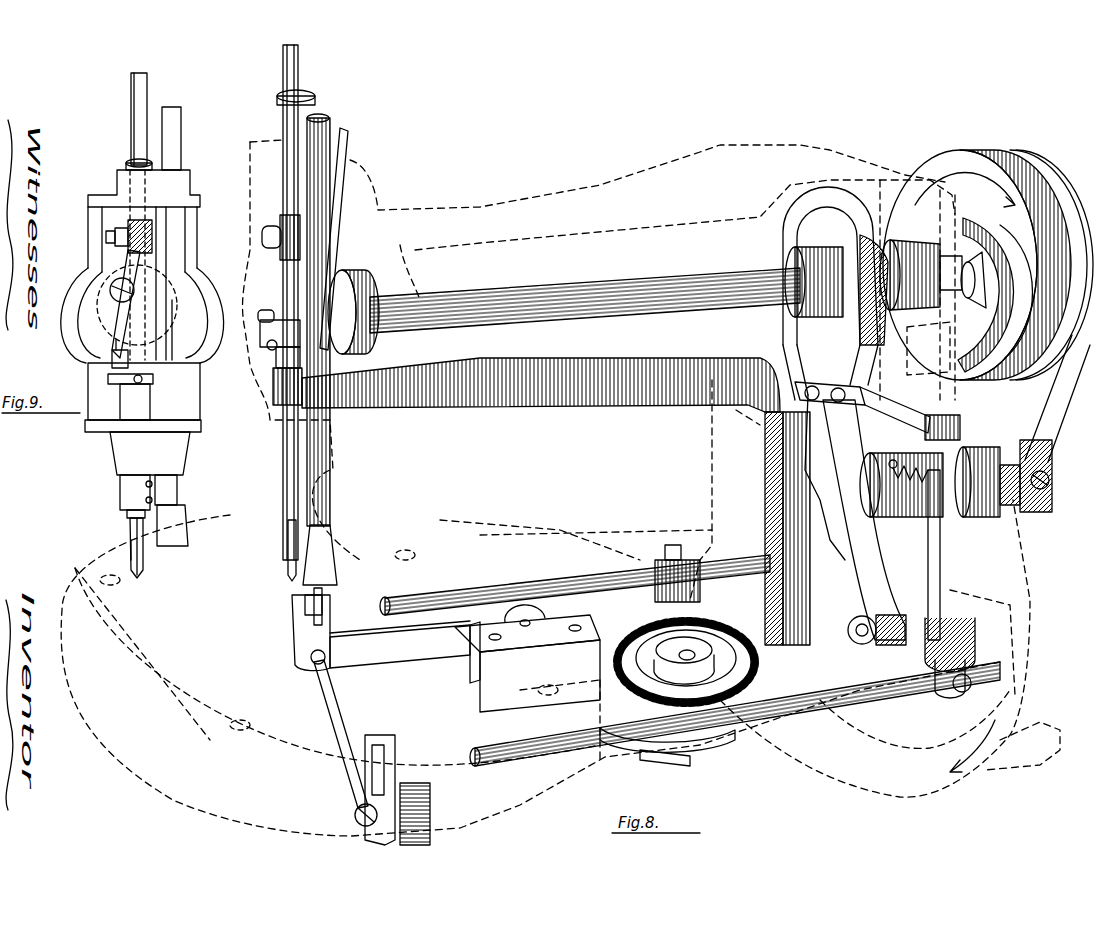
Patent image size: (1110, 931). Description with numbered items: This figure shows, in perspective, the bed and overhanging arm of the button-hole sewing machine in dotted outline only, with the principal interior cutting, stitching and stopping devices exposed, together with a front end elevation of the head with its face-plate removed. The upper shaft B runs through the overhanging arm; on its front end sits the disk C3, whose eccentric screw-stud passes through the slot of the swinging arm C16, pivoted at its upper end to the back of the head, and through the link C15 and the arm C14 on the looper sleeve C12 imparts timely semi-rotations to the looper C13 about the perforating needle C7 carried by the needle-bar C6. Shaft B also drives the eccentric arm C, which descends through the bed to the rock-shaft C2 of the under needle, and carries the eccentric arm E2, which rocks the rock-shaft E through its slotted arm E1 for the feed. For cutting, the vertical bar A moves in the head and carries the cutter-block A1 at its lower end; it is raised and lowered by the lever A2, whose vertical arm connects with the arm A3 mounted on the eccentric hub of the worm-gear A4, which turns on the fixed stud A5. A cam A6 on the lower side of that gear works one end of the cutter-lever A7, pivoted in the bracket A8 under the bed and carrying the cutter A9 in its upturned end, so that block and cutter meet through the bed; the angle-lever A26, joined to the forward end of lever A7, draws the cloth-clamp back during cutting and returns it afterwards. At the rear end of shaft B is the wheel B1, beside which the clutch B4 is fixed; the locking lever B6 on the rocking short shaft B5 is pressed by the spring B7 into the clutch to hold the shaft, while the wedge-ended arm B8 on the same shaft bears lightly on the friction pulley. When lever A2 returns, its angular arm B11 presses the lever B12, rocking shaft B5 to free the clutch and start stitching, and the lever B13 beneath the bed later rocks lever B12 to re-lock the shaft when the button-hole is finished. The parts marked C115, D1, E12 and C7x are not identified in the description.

In FIG. 9, the slotted swinging arm C16 is at (132, 104).
In FIG. 8, the slotted swinging arm C16 is at (332, 240).
In FIG. 9, the link C15 is at (152, 225).
In FIG. 8, the link C15 is at (280, 250).
In FIG. 9, the arm C14 is at (128, 268).
In FIG. 8, the arm C14 is at (258, 321).
In FIG. 9, the link C115 is at (110, 358).
In FIG. 9, the upper shaft B is at (133, 290).
In FIG. 8, the upper shaft B is at (585, 297).
In FIG. 9, the disk C3 is at (152, 305).
In FIG. 8, the disk C3 is at (353, 312).
In FIG. 9, the sleeve C12 is at (128, 484).
In FIG. 8, the sleeve C12 is at (260, 346).
In FIG. 9, the lever A2 is at (156, 380).
In FIG. 8, the lever A2 is at (541, 391).
In FIG. 9, the vertical bar A is at (177, 488).
In FIG. 8, the vertical bar A is at (331, 491).
In FIG. 9, the cutter-block A1 is at (172, 525).
In FIG. 8, the cutter-block A1 is at (337, 549).
In FIG. 9, the needle-bar C6 is at (126, 512).
In FIG. 8, the needle-bar C6 is at (282, 125).
In FIG. 9, the looper C13 is at (142, 566).
In FIG. 8, the looper C13 is at (286, 558).
In FIG. 9, the rock-shaft C2 is at (130, 553).
In FIG. 8, the rock-shaft C2 is at (735, 714).
In FIG. 8, the perforating-needle C7 is at (300, 544).
In FIG. 8, the cutter A9 is at (325, 592).
In FIG. 8, the cutter-lever A7 is at (493, 668).
In FIG. 8, the bracket A8 is at (527, 658).
In FIG. 8, the rock-shaft E is at (538, 592).
In FIG. 8, the slotted arm E1 is at (702, 600).
In FIG. 8, the worm-gear A4 is at (640, 632).
In FIG. 8, the fixed vertical stud A5 is at (677, 706).
In FIG. 8, the cam A6 is at (667, 739).
In FIG. 8, the angle-lever A26 is at (356, 776).
In FIG. 8, the base D1 is at (246, 691).
In FIG. 8, the eccentric arm E2 is at (835, 293).
In FIG. 8, the clutch B4 is at (921, 266).
In FIG. 8, the locking arm or lever B6 is at (940, 384).
In FIG. 8, the short shaft B5 is at (962, 520).
In FIG. 8, the spring B7 is at (986, 295).
In FIG. 8, the wheel B1 is at (988, 265).
In FIG. 8, the arm B8 is at (1045, 414).
In FIG. 8, the angular arm B11 is at (877, 411).
In FIG. 8, the link E12 is at (829, 477).
In FIG. 8, the eccentric arm C is at (862, 548).
In FIG. 8, the lever B12 is at (938, 566).
In FIG. 8, the lever pin C7x is at (909, 605).
In FIG. 8, the arm A3 is at (848, 623).
In FIG. 8, the lever B13 is at (960, 640).